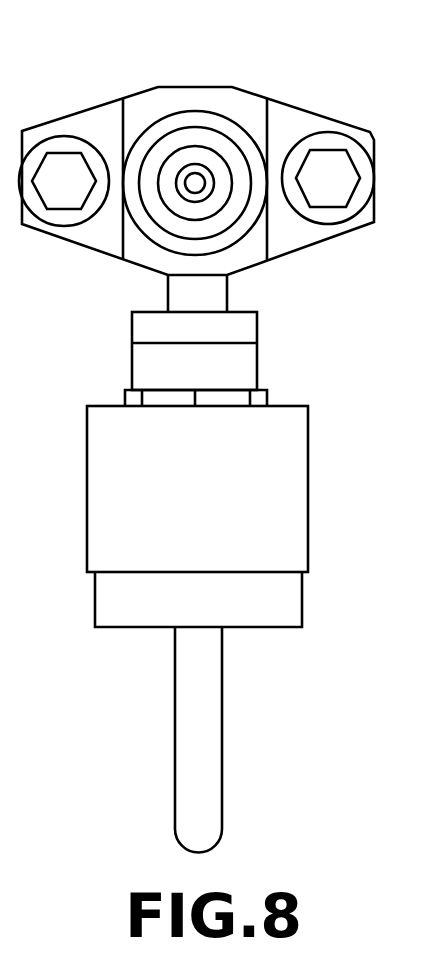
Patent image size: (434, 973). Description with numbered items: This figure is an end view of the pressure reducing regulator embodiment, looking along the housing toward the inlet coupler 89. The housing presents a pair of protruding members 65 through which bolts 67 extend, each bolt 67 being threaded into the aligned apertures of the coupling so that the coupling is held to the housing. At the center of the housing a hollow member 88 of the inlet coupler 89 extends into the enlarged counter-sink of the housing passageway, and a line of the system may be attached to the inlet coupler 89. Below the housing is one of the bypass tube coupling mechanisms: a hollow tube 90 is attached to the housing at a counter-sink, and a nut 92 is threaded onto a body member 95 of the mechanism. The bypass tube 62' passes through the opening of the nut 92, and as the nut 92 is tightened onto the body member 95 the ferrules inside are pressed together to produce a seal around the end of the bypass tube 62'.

The protruding members 65 is at (110, 233).
The bolts 67 is at (64, 148).
The hollow member 88 is at (195, 157).
The inlet coupler 89 is at (223, 135).
The hollow members or tubes 90 is at (215, 296).
The nut 92 is at (293, 505).
The body member 95 is at (248, 365).
The bypass tube 62' is at (158, 739).